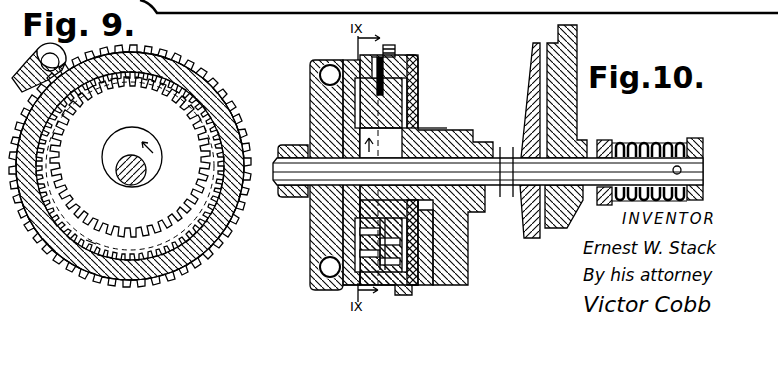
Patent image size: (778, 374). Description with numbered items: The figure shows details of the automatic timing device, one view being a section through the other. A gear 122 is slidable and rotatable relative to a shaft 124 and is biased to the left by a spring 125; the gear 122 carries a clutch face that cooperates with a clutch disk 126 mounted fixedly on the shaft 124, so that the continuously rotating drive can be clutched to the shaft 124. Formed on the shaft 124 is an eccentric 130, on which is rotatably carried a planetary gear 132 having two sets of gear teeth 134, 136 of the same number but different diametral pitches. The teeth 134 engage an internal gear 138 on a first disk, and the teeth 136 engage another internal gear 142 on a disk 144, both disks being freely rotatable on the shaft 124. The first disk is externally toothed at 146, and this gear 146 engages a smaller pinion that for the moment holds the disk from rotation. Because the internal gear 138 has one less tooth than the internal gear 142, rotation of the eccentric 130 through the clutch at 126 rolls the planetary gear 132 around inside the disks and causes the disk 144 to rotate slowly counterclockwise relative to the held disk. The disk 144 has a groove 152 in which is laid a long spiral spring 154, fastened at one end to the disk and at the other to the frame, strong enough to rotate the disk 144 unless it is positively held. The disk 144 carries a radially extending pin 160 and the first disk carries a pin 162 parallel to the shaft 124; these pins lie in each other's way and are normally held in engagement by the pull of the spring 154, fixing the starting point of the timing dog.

In FIG. 10, the gear 122 is at (578, 36).
In FIG. 9, the shaft 124 is at (116, 180).
In FIG. 10, the shaft 124 is at (690, 171).
In FIG. 10, the spring 125 is at (654, 143).
In FIG. 10, the clutch disk 126 is at (532, 64).
In FIG. 9, the eccentric 130 is at (106, 141).
In FIG. 10, the eccentric 130 is at (386, 147).
In FIG. 9, the planetary gear 132 is at (145, 240).
In FIG. 10, the planetary gear 132 is at (405, 107).
In FIG. 10, the gear teeth 134 is at (419, 57).
In FIG. 9, the gear teeth 136 is at (173, 218).
In FIG. 10, the gear teeth 136 is at (357, 63).
In FIG. 9, the internal gear 138 is at (130, 157).
In FIG. 10, the internal gear 138 is at (395, 66).
In FIG. 9, the internal gear 142 is at (91, 243).
In FIG. 10, the internal gear 142 is at (372, 60).
In FIG. 9, the disk 144 is at (213, 107).
In FIG. 10, the disk 144 is at (332, 217).
In FIG. 9, the external gear teeth 146 is at (193, 69).
In FIG. 10, the external gear teeth 146 is at (405, 289).
In FIG. 10, the groove 152 is at (319, 279).
In FIG. 10, the spiral spring 154 is at (322, 67).
In FIG. 9, the pin 160 is at (45, 96).
In FIG. 9, the pin 162 is at (62, 56).